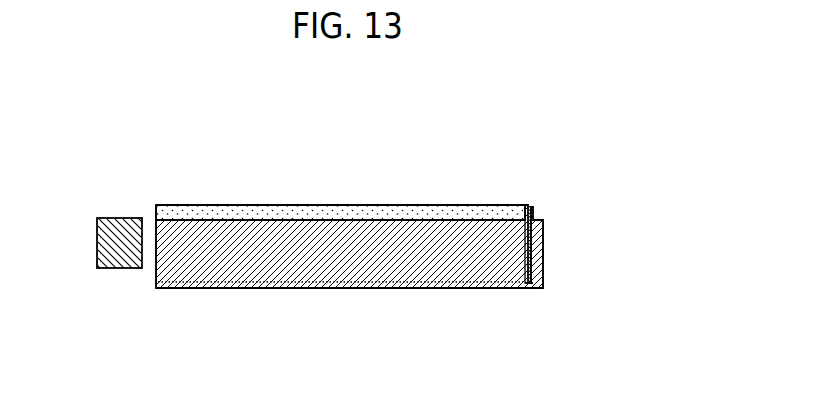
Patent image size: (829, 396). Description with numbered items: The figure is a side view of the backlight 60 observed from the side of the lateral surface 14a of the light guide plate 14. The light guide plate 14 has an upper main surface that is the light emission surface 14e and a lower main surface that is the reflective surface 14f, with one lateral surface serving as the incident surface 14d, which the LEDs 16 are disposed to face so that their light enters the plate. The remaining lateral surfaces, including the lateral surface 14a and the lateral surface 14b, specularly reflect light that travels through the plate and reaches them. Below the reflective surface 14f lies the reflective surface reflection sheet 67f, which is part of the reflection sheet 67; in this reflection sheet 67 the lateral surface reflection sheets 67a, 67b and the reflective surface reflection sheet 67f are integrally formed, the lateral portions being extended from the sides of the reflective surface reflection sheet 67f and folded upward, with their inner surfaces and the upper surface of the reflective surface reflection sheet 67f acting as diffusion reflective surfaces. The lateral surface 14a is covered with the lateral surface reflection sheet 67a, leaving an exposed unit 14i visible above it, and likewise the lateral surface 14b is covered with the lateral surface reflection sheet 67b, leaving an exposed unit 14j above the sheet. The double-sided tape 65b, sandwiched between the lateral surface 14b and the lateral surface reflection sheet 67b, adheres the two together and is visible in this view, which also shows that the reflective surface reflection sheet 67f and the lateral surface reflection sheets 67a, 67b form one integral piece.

The light guide plate 14 is at (348, 220).
The lateral surface 14a is at (326, 184).
The lateral surface 14b is at (525, 253).
The incident surface 14d is at (141, 212).
The light emission surface 14e is at (246, 205).
The reflective surface 14f is at (347, 270).
The exposed unit 14i is at (310, 210).
The exposed unit 14j is at (525, 205).
The LED 16 is at (97, 245).
The backlight 60 is at (352, 220).
The double-sided tape 65b is at (533, 207).
The reflection sheet 67 is at (348, 268).
The lateral surface reflection sheet 67a is at (183, 265).
The lateral surface reflection sheet 67b is at (545, 242).
The reflective surface reflection sheet 67f is at (275, 288).